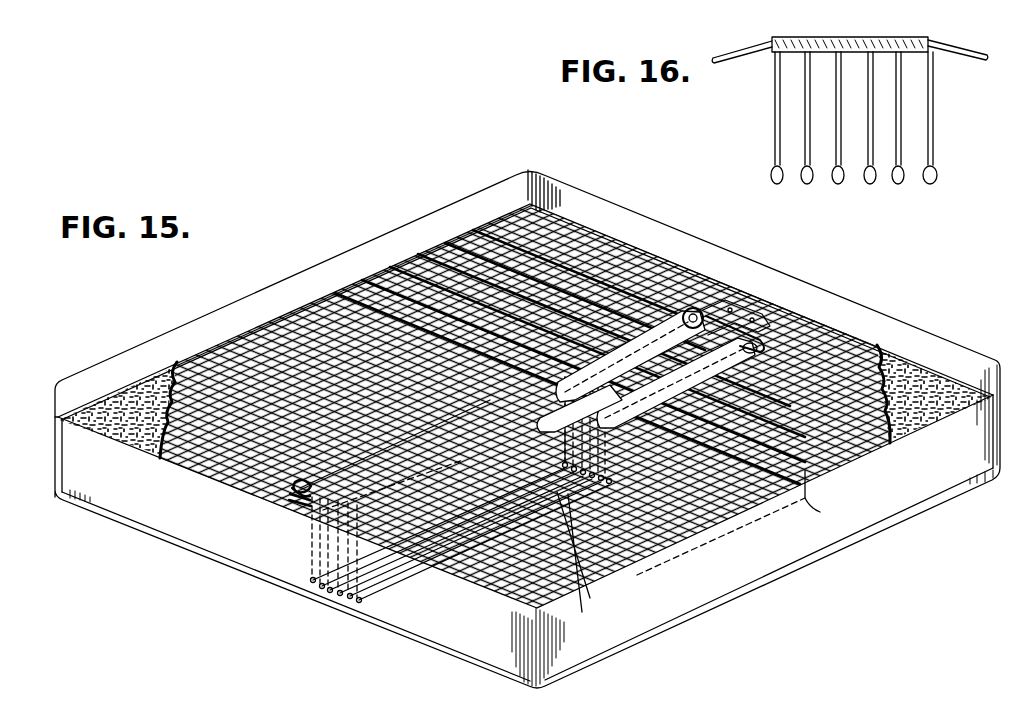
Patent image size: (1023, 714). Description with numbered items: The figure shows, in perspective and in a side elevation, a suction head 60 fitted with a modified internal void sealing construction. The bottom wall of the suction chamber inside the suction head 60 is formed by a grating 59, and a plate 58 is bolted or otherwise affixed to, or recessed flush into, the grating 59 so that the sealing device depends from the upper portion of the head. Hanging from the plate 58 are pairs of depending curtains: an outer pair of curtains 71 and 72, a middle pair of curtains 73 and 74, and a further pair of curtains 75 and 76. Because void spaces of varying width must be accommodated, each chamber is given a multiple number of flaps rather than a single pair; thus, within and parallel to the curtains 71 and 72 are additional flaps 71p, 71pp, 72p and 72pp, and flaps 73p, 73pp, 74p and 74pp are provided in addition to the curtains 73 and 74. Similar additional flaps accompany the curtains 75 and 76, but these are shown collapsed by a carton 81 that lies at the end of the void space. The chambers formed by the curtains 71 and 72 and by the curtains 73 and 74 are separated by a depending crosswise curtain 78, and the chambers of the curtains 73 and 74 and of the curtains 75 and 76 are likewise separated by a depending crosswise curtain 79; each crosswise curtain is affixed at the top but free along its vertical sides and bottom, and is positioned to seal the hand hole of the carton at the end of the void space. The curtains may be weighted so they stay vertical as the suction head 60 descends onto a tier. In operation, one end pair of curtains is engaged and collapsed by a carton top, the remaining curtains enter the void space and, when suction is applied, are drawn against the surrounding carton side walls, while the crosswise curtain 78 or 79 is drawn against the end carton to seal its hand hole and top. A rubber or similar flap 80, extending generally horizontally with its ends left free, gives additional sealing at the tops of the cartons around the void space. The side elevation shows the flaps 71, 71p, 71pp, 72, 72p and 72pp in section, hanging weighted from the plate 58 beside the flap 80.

In FIG. 15, the plate 58 is at (742, 300).
In FIG. 16, the plate 58 is at (846, 37).
In FIG. 15, the grating 59 is at (266, 328).
In FIG. 15, the suction head 60 is at (396, 228).
In FIG. 15, the depending curtain 71 is at (312, 582).
In FIG. 16, the depending curtain 71 is at (779, 184).
In FIG. 15, the flap 71p is at (322, 588).
In FIG. 16, the flap 71p is at (810, 184).
In FIG. 15, the flap 71pp is at (330, 593).
In FIG. 16, the flap 71pp is at (841, 184).
In FIG. 15, the depending curtain 72 is at (360, 603).
In FIG. 16, the depending curtain 72 is at (936, 184).
In FIG. 15, the flap 72p is at (351, 599).
In FIG. 16, the flap 72p is at (902, 184).
In FIG. 15, the flap 72pp is at (341, 596).
In FIG. 16, the flap 72pp is at (873, 184).
In FIG. 15, the depending curtain 73 is at (562, 380).
In FIG. 15, the flap 73p is at (572, 384).
In FIG. 15, the flap 73pp is at (582, 387).
In FIG. 15, the depending curtain 74 is at (588, 596).
In FIG. 15, the flap 74p is at (584, 612).
In FIG. 15, the flap 74pp is at (591, 391).
In FIG. 15, the depending curtain 75 is at (668, 318).
In FIG. 15, the depending curtain 76 is at (745, 350).
In FIG. 15, the crosswise curtain 78 is at (472, 490).
In FIG. 15, the crosswise curtain 79 is at (587, 408).
In FIG. 16, the flap 80 is at (968, 60).
In FIG. 15, the carton 81 is at (825, 500).